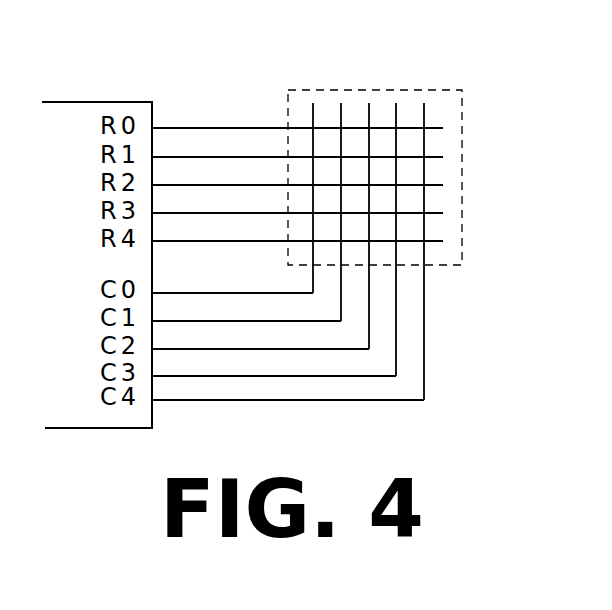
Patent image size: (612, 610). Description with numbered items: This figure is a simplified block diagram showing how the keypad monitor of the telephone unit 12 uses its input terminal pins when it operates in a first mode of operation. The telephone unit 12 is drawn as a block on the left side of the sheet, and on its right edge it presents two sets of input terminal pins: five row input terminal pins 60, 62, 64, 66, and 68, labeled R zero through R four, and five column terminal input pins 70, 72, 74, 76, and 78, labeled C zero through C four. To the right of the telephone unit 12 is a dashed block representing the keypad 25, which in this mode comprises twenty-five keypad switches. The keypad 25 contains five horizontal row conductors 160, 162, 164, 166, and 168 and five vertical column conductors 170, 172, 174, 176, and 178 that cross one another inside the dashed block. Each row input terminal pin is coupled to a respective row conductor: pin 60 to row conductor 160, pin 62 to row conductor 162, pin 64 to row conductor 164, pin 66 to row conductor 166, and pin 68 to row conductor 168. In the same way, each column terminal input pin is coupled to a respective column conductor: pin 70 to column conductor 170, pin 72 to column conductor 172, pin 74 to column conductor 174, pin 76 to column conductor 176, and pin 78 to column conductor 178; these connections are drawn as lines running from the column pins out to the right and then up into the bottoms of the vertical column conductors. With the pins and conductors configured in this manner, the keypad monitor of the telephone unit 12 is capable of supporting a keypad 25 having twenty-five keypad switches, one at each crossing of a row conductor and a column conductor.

The telephone unit 12 is at (52, 102).
The keypad 25 is at (368, 161).
The row input terminal pin 60 is at (154, 126).
The row input terminal pin 62 is at (154, 155).
The row input terminal pin 64 is at (154, 183).
The row input terminal pin 66 is at (154, 211).
The row input terminal pin 68 is at (154, 239).
The column terminal input pin 70 is at (154, 291).
The column terminal input pin 72 is at (154, 319).
The column terminal input pin 74 is at (154, 347).
The column terminal input pin 76 is at (154, 374).
The column terminal input pin 78 is at (154, 398).
The row conductor 160 is at (443, 128).
The row conductor 162 is at (443, 157).
The row conductor 164 is at (443, 185).
The row conductor 166 is at (443, 213).
The row conductor 168 is at (443, 241).
The column conductor 170 is at (308, 107).
The column conductor 172 is at (338, 106).
The column conductor 174 is at (366, 106).
The column conductor 176 is at (397, 108).
The column conductor 178 is at (427, 107).